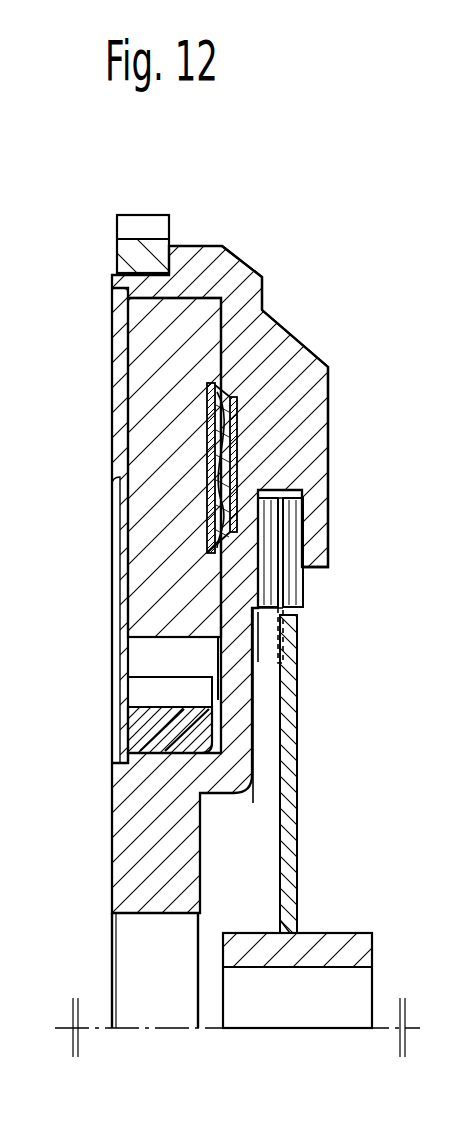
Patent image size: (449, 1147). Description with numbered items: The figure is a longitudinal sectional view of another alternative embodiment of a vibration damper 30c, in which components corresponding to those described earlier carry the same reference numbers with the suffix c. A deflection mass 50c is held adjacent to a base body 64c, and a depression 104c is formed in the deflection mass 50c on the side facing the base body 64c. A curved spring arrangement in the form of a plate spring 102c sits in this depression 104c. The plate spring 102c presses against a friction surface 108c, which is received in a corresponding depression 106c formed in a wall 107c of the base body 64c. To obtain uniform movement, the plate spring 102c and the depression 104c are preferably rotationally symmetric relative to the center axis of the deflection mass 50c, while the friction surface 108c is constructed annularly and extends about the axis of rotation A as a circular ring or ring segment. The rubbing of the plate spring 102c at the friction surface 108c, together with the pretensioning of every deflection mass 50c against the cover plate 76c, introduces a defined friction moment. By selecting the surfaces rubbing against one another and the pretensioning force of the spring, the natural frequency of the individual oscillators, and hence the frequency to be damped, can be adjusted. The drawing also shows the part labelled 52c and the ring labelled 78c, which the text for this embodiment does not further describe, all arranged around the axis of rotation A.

The vibration damper 30c is at (270, 260).
The housing body 52c is at (181, 297).
The plate spring 102c is at (268, 327).
The base body 64c is at (312, 349).
The wall 107c is at (313, 432).
The cover plate 76c is at (112, 418).
The deflection mass 50c is at (147, 565).
The seal 78c is at (138, 717).
The depression 104c is at (206, 499).
The depression 106c is at (238, 402).
The friction surface 108c is at (240, 477).
The axis of rotation A is at (240, 1030).